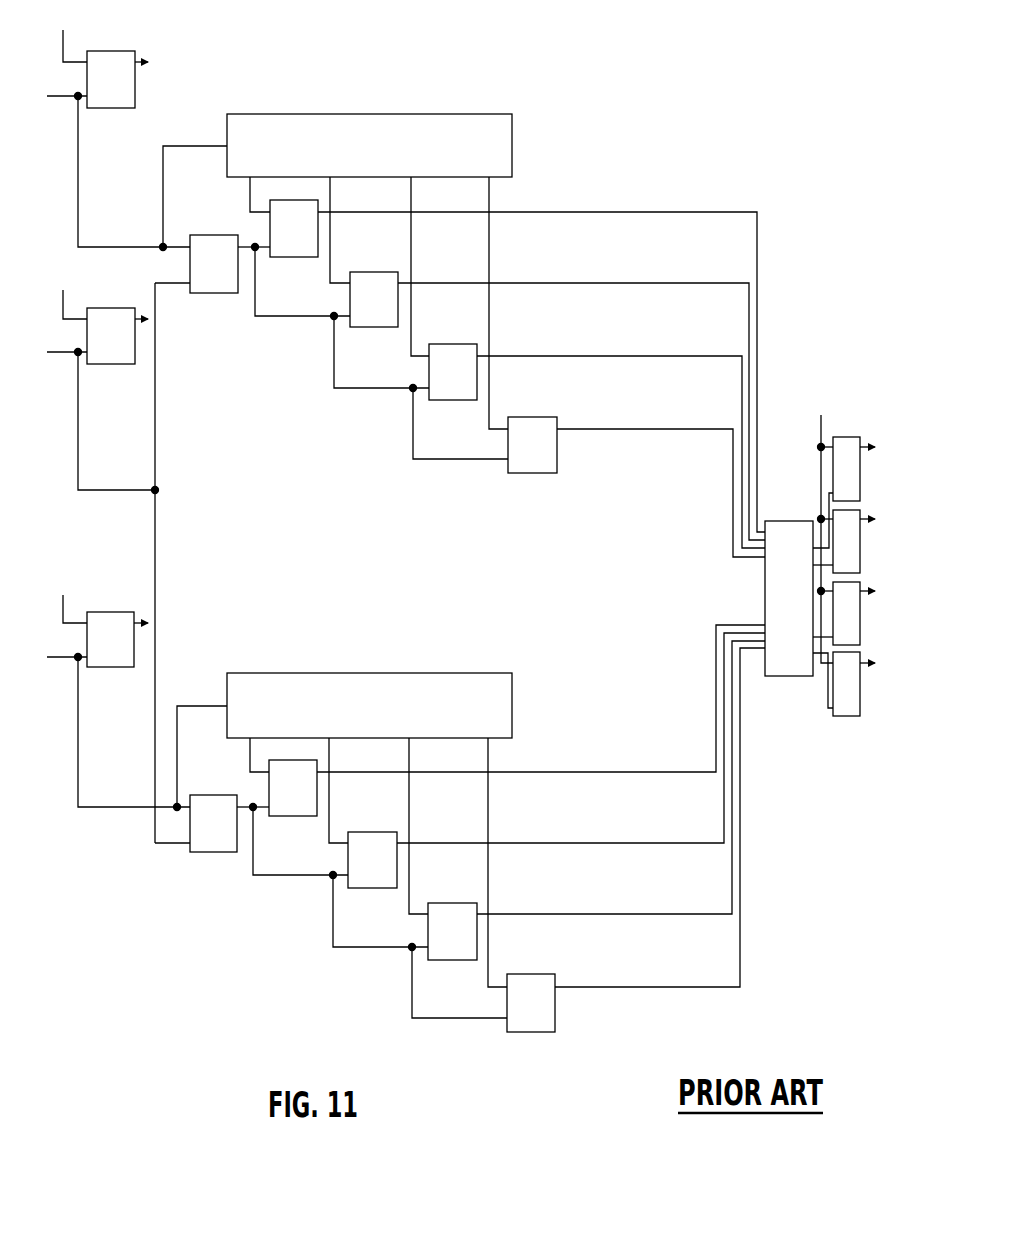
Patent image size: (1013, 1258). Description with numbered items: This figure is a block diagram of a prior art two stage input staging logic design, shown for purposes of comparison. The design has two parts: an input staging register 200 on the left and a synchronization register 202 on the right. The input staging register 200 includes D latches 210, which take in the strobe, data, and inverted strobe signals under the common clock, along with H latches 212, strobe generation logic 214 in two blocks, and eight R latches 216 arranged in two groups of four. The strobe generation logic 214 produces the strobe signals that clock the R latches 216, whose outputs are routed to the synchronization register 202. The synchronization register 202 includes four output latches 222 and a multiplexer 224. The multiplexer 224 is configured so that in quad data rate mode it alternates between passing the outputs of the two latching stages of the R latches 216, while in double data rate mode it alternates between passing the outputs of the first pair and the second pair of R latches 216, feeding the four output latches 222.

The input staging register 200 is at (751, 44).
The synchronization register 202 is at (791, 380).
The D latches 210 is at (112, 51).
The H latches 212 is at (203, 291).
The strobe generation logic 214 is at (433, 114).
The R latches 216 is at (283, 257).
The H3 latches 222 is at (843, 437).
The M1 multiplexer 224 is at (778, 521).